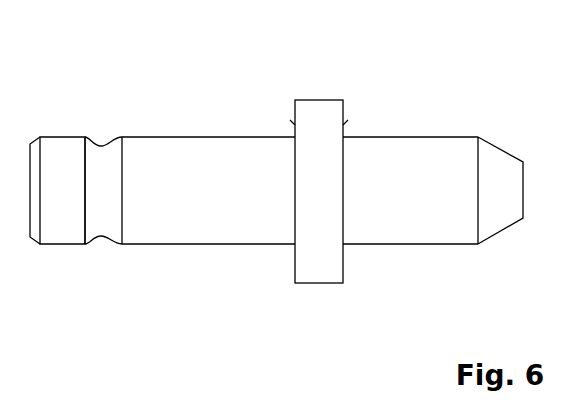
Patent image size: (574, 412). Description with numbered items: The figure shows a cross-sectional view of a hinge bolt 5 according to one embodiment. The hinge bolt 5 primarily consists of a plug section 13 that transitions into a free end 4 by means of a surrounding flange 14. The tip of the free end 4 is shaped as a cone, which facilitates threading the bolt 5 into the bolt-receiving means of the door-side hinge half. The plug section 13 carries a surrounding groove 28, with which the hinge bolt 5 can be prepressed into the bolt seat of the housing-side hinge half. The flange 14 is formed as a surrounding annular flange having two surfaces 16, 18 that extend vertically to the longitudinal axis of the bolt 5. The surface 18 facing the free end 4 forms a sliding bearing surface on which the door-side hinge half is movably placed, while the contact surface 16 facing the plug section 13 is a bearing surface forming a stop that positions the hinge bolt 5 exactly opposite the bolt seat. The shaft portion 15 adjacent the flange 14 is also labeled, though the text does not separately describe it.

The free end 4 is at (450, 160).
The hinge bolt 5 is at (143, 68).
The plug section 13 is at (198, 160).
The flange 14 is at (318, 112).
The shaft section 15 is at (377, 137).
The contact surface 16 is at (291, 120).
The surface 18 is at (348, 120).
The groove 28 is at (101, 238).